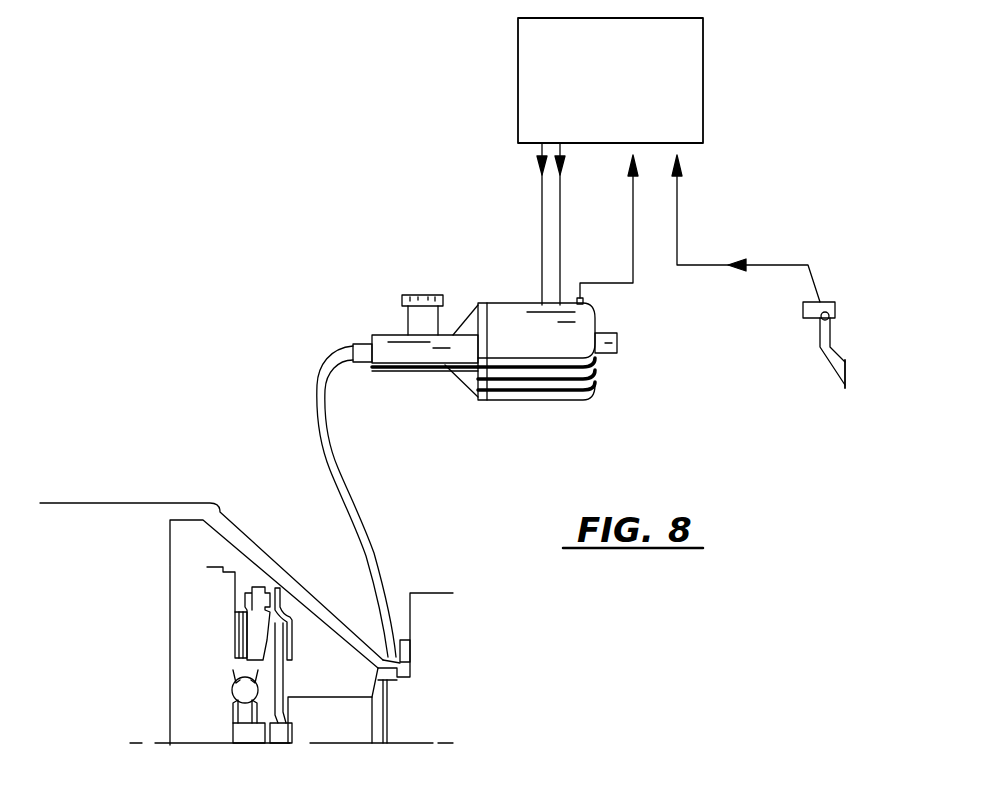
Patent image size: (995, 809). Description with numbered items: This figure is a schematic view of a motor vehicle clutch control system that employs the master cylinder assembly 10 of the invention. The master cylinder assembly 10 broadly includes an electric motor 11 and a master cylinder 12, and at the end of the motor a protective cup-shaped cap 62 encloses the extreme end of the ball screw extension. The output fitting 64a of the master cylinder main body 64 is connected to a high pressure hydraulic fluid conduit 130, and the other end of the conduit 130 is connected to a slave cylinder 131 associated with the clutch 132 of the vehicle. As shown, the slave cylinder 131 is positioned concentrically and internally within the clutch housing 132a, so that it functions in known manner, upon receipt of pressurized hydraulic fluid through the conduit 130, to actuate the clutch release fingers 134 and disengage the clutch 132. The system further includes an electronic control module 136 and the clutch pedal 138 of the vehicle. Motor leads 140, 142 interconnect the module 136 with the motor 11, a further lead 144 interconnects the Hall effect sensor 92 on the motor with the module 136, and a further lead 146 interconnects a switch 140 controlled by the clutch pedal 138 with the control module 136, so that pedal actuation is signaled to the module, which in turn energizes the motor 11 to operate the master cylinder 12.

The master cylinder assembly 10 is at (461, 275).
The electric motor 11 is at (527, 290).
The master cylinder 12 is at (387, 322).
The cup-shaped cap 62 is at (620, 345).
The master cylinder main body 64 is at (423, 368).
The output fitting 64a is at (361, 363).
The Hall effect sensor 92 is at (584, 302).
The high pressure hydraulic fluid conduit 130 is at (328, 465).
The slave cylinder 131 is at (333, 728).
The clutch 132 is at (212, 639).
The clutch housing 132a is at (297, 582).
The clutch release fingers 134 is at (283, 680).
The electronic control module 136 is at (634, 92).
The clutch pedal 138 is at (836, 352).
The motor lead 140 is at (542, 208).
The motor lead 142 is at (560, 210).
The lead 144 is at (633, 253).
The lead 146 is at (677, 220).